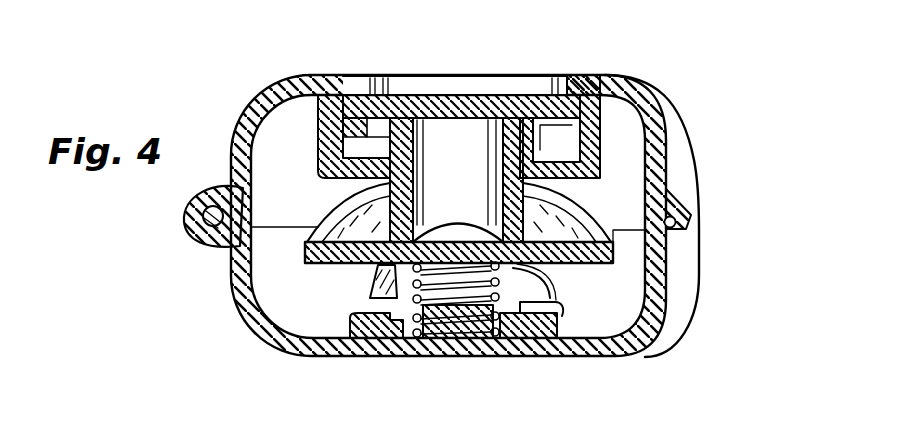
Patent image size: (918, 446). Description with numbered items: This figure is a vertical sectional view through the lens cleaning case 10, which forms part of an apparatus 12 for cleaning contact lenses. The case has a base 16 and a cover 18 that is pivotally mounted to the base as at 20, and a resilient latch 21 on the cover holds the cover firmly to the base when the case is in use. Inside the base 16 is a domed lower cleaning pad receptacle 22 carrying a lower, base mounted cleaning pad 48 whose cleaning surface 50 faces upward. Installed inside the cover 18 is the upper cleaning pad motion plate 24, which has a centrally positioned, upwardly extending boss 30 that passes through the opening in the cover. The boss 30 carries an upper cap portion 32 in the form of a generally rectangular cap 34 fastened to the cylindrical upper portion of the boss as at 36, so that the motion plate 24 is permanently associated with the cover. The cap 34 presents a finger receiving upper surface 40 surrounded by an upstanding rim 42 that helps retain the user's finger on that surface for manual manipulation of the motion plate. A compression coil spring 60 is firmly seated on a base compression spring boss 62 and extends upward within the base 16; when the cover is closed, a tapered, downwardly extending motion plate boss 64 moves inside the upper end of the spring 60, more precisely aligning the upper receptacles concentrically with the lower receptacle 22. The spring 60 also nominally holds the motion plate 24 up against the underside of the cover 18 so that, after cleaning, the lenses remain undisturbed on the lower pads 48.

The lens cleaning case 10 is at (262, 354).
The apparatus 12 is at (678, 74).
The base 16 is at (272, 292).
The cover 18 is at (290, 120).
The pivot mounting 20 is at (206, 232).
The resilient latch 21 is at (674, 222).
The lower cleaning pad receptacles 22 is at (565, 303).
The upper cleaning pad motion plate 24 is at (578, 214).
The boss 30 is at (415, 158).
The upper cap portion 32 is at (520, 100).
The cap 34 is at (325, 102).
The fastening location 36 is at (414, 100).
The finger receiving upper surface 40 is at (455, 100).
The upstanding rim 42 is at (352, 102).
The lower base mounted cleaning pads 48 is at (552, 292).
The cleaning surface 50 is at (370, 283).
The compression coil spring 60 is at (480, 342).
The base compression spring boss 62 is at (414, 343).
The tapered downwardly extending motion plate boss 64 is at (472, 240).